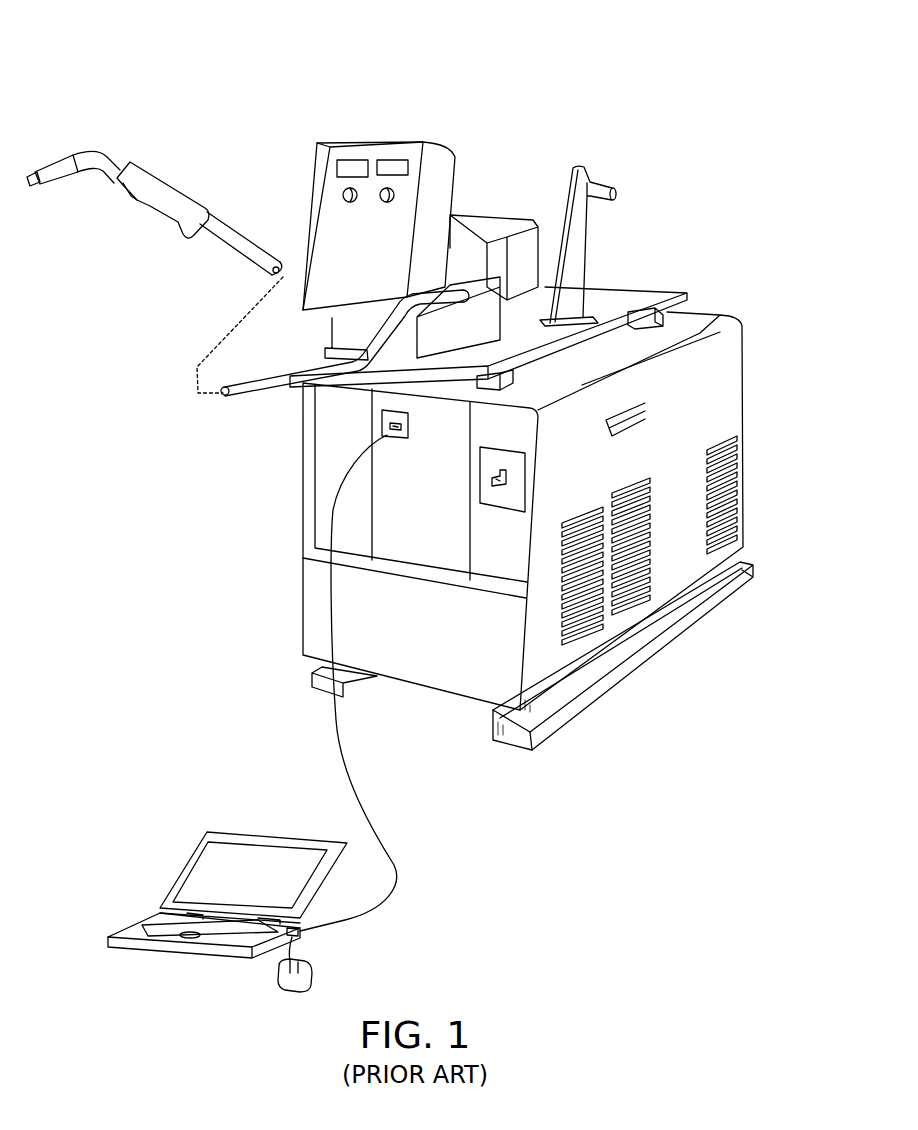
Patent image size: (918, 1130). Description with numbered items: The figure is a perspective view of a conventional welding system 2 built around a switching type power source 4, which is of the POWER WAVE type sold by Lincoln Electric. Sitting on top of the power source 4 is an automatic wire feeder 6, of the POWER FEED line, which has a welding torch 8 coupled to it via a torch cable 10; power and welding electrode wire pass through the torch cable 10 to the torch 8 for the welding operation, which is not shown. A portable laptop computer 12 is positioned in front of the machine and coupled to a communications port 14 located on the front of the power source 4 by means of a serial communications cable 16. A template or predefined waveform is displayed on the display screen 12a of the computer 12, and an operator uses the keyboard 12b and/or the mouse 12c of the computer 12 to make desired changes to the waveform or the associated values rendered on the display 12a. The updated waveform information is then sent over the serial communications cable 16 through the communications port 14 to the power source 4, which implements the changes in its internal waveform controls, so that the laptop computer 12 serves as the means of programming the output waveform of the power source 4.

The welding system 2 is at (108, 43).
The switching type power source 4 is at (723, 378).
The automatic wire feeder 6 is at (427, 163).
The welding torch 8 is at (143, 177).
The torch cable 10 is at (250, 253).
The portable laptop computer 12 is at (173, 824).
The display screen 12a is at (222, 880).
The keyboard 12b is at (163, 927).
The mouse 12c is at (310, 977).
The communications port 14 is at (403, 446).
The serial communications cable 16 is at (365, 818).